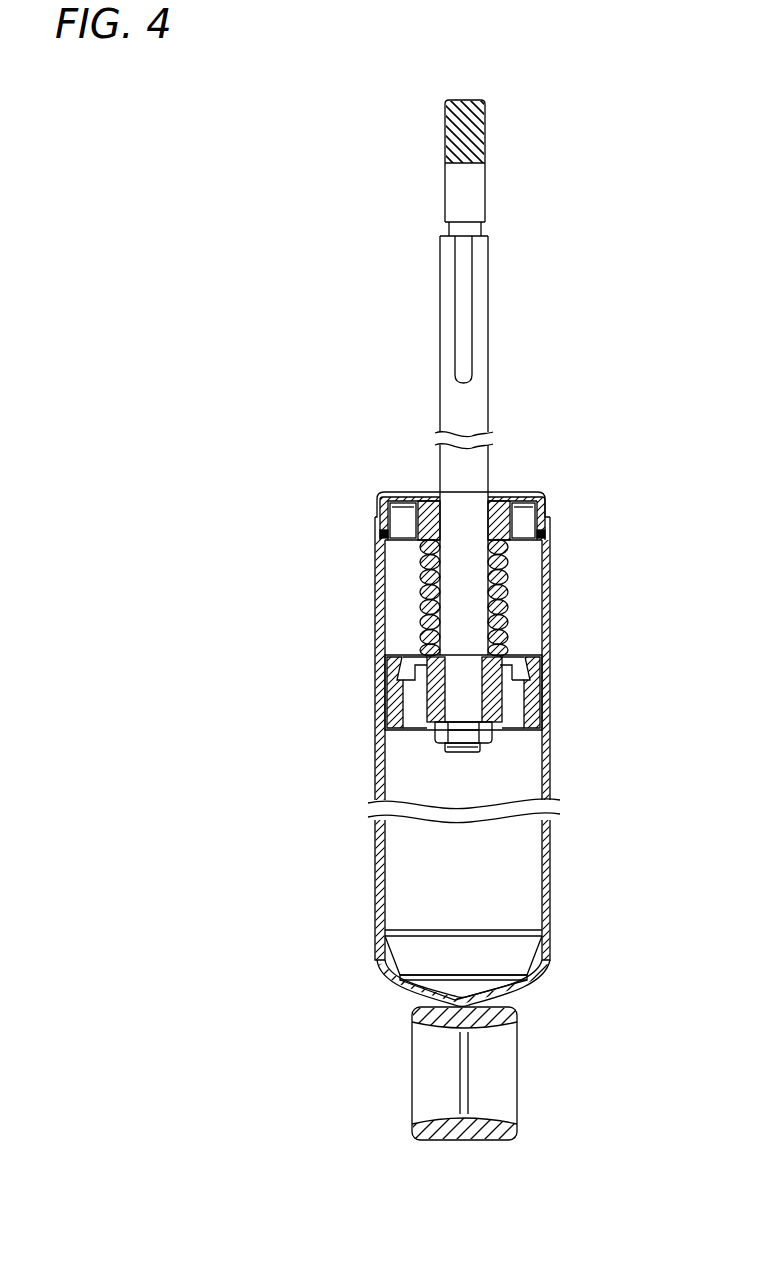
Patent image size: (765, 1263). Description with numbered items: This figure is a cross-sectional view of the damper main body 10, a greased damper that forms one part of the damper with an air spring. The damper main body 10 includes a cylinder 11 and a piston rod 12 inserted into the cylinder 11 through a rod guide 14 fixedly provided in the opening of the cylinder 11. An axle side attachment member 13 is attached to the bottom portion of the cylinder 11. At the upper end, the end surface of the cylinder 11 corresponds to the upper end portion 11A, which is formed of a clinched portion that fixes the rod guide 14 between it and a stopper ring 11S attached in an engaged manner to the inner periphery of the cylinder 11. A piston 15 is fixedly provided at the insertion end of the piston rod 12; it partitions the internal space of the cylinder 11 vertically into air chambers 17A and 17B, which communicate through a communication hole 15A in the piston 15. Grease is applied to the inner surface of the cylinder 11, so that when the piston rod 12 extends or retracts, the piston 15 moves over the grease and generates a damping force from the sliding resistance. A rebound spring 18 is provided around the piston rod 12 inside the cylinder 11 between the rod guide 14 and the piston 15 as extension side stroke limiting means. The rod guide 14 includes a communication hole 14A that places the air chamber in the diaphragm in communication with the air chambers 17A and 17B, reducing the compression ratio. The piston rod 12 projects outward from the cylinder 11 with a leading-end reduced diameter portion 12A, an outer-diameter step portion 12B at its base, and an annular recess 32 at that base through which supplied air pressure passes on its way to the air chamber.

The damper main body 10 is at (320, 368).
The cylinder 11 is at (376, 880).
The upper end portion of the cylinder 11A is at (383, 493).
The stopper ring 11S is at (380, 535).
The piston rod 12 is at (440, 283).
The leading-end reduced diameter portion 12A is at (445, 186).
The outer-diameter step portion 12B is at (449, 229).
The axle side attachment member 13 is at (449, 1137).
The rod guide 14 is at (548, 497).
The communication hole of the rod guide 14A is at (522, 532).
The piston 15 is at (540, 666).
The communication hole of the piston 15A is at (512, 706).
The air chamber 17A is at (520, 604).
The air chamber 17B is at (505, 775).
The rebound spring 18 is at (425, 600).
The annular recess 32 is at (481, 230).